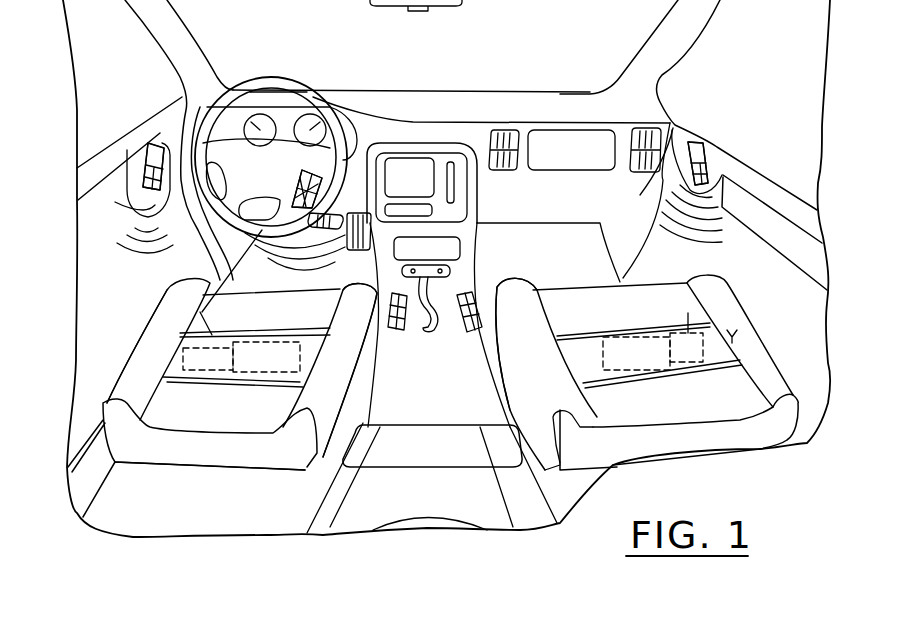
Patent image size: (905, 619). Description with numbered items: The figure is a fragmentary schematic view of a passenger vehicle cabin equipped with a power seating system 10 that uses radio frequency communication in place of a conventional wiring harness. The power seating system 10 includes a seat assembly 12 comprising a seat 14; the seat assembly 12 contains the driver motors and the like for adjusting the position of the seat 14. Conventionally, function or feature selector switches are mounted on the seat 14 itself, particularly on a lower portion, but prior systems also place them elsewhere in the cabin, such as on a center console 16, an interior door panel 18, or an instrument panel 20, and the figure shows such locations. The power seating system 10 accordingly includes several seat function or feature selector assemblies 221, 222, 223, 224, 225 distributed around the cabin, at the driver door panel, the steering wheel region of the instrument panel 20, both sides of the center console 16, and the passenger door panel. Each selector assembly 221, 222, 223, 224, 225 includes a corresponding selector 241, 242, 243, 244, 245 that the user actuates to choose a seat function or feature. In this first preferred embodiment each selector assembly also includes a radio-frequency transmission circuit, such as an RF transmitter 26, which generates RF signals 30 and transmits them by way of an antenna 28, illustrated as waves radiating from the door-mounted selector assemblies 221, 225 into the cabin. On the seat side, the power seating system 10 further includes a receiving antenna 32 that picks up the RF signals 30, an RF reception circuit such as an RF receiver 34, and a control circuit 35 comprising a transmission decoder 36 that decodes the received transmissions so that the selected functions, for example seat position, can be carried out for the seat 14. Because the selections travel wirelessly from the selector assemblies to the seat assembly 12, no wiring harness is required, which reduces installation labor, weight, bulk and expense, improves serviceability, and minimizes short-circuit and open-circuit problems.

The power seating system 10 is at (93, 70).
The seat assembly 12 is at (194, 472).
The seat 14 is at (170, 397).
The center console 16 is at (470, 240).
The interior door panel 18 is at (162, 288).
The instrument panel 20 is at (323, 170).
The seat function selector assembly 221 is at (139, 145).
The seat function selector assembly 222 is at (330, 140).
The seat function selector assembly 223 is at (377, 327).
The seat function selector assembly 224 is at (483, 336).
The seat function selector assembly 225 is at (711, 140).
The selector 241 is at (142, 181).
The selector 242 is at (297, 180).
The selector 243 is at (392, 328).
The selector 244 is at (463, 334).
The selector 245 is at (707, 178).
The RF transmitter 26 is at (141, 191).
The antenna 28 is at (115, 202).
The RF signals 30 is at (109, 254).
The receiving antenna 32 is at (176, 344).
The RF receiver 34 is at (451, 317).
The control circuit 35 is at (259, 337).
The transmission decoder 36 is at (277, 340).